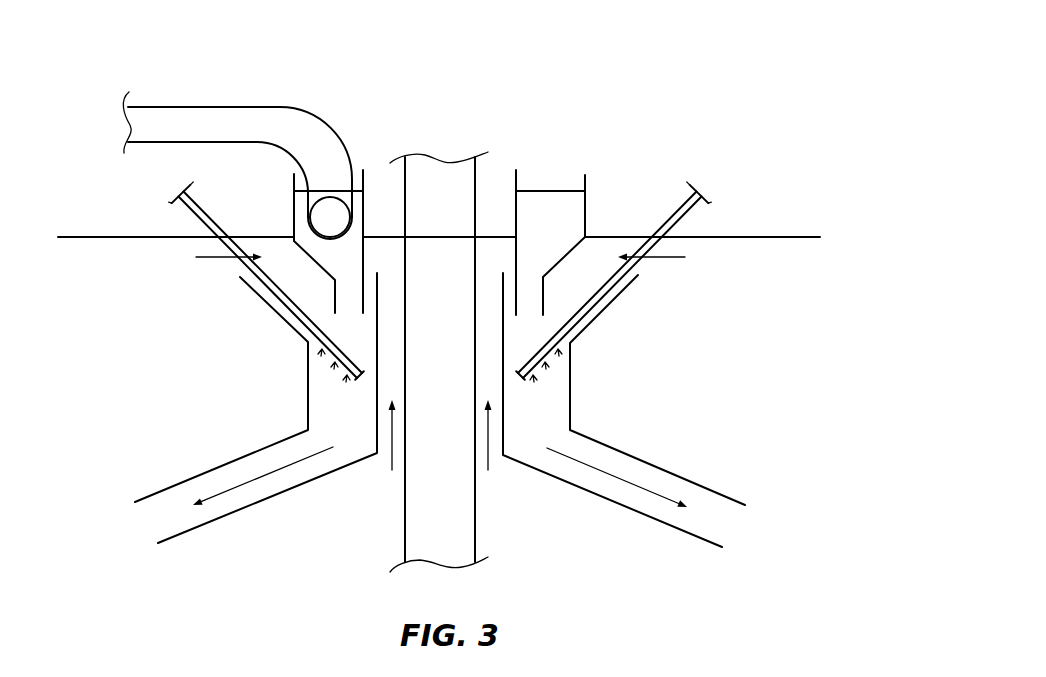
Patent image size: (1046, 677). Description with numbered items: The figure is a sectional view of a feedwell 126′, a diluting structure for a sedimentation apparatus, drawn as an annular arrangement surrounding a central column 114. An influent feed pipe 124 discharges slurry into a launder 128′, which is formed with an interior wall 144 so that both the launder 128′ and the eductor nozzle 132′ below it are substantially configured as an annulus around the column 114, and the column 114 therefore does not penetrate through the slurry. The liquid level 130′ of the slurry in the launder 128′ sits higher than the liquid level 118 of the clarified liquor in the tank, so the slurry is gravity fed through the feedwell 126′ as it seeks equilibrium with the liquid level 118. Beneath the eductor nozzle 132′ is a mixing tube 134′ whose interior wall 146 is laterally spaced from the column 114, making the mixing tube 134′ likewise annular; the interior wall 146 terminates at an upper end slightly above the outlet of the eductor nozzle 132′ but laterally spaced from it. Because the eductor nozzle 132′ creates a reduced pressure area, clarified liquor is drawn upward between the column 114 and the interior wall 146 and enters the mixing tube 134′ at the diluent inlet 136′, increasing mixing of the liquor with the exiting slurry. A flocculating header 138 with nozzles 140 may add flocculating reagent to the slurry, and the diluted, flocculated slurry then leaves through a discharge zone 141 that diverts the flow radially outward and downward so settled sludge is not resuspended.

The column 114 is at (420, 158).
The liquid level 118 is at (763, 237).
The influent feed pipe 124 is at (273, 107).
The feedwell 126′ is at (660, 336).
The launder 128′ is at (587, 203).
The liquid level 130′ is at (348, 173).
The eductor nozzle 132′ is at (543, 305).
The mixing tube 134′ is at (570, 363).
The diluent inlet 136′ is at (692, 268).
The flocculating header 138 is at (285, 310).
The nozzles 140 is at (318, 350).
The discharge zone 141 is at (737, 552).
The interior wall 144 is at (515, 205).
The interior wall 146 is at (505, 418).